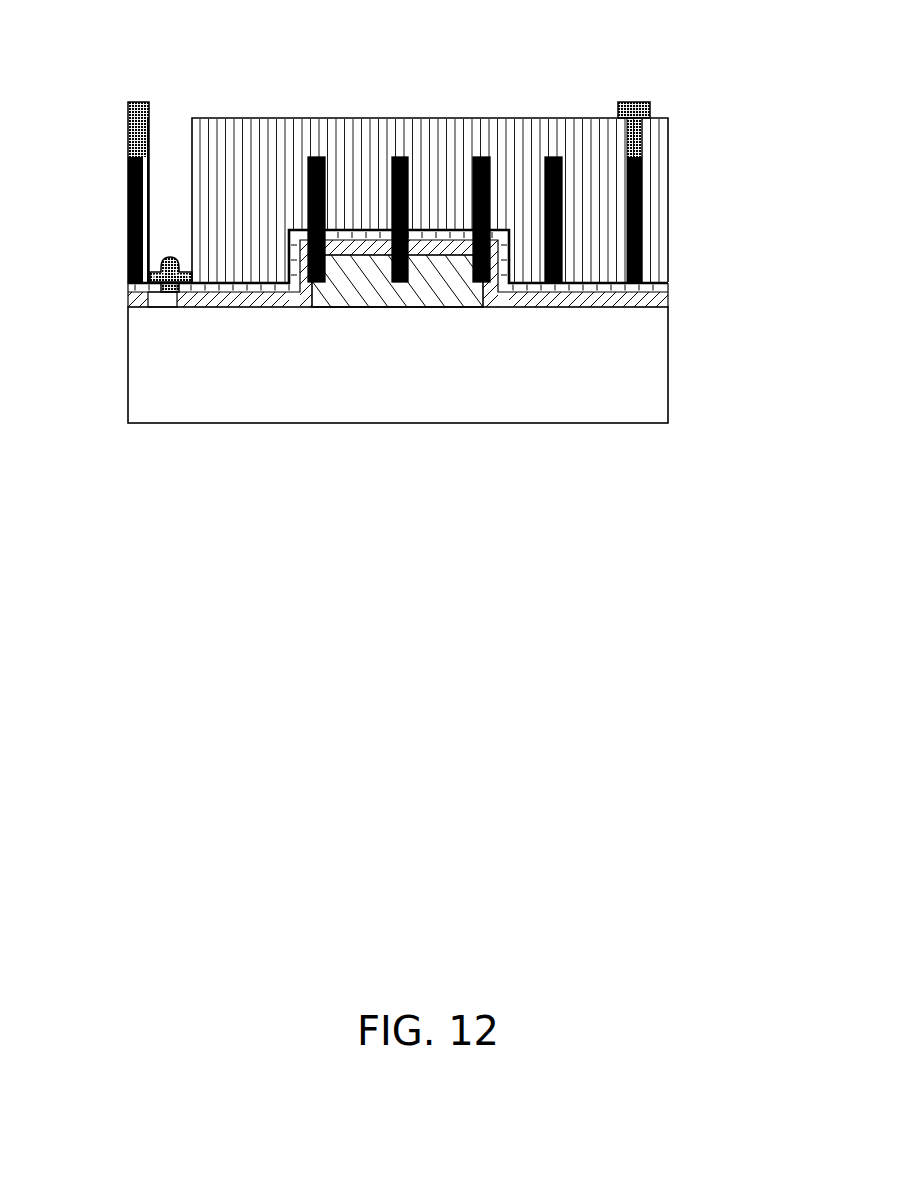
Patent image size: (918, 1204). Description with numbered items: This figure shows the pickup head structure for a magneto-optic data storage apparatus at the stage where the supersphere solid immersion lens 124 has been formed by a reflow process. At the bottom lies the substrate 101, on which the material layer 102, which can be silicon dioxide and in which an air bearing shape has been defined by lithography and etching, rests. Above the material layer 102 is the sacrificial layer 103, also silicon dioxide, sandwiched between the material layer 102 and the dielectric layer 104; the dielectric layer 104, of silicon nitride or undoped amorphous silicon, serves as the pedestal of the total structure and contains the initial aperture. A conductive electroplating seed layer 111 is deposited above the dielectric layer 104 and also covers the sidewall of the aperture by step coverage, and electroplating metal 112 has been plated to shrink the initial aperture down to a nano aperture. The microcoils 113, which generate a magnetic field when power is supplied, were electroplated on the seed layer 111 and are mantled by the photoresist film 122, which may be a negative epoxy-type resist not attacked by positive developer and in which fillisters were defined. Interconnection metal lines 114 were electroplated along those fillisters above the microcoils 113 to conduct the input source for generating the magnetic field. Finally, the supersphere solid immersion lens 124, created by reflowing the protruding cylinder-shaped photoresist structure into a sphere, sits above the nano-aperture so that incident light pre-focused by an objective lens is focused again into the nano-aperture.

The substrate 101 is at (652, 375).
The material layer 102 is at (430, 296).
The sacrificial layer 103 is at (538, 298).
The dielectric layer 104 is at (243, 291).
The electroplating seed layer 111 is at (666, 282).
The electroplating metal 112 is at (152, 294).
The microcoils 113 is at (548, 157).
The interconnection metal lines 114 is at (138, 102).
The photoresist film 122 is at (270, 147).
The supersphere solid immersion lens 124 is at (170, 293).